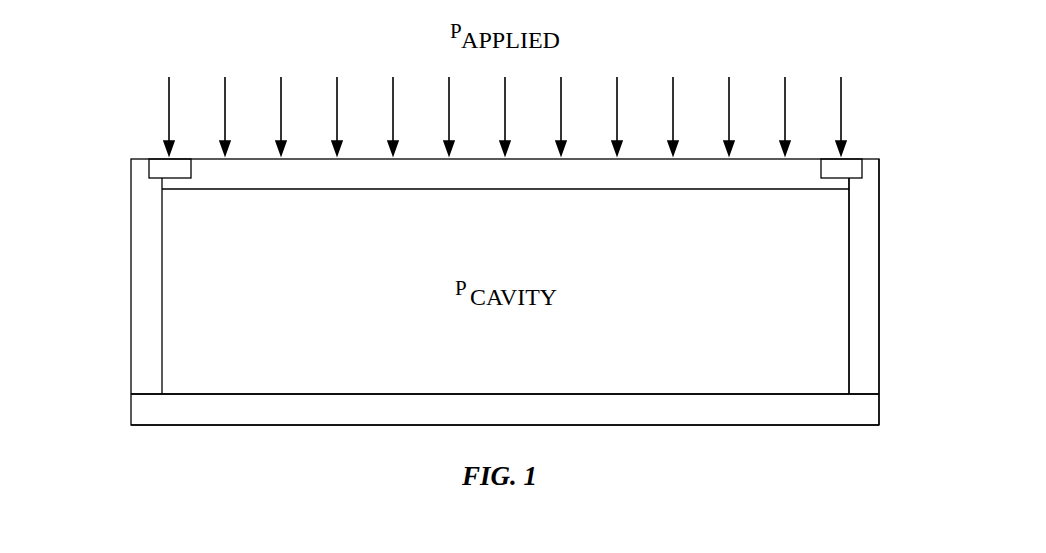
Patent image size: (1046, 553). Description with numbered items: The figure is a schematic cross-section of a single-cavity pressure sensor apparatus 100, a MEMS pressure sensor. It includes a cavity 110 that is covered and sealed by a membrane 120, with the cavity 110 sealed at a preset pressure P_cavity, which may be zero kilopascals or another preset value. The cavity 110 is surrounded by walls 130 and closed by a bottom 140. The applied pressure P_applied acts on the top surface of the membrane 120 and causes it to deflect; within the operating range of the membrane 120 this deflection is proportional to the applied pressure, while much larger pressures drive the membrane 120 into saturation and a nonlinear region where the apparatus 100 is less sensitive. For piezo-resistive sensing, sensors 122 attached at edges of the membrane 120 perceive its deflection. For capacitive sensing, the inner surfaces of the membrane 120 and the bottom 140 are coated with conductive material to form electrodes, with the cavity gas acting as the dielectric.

The single-cavity pressure sensor apparatus 100 is at (126, 97).
The cavity 110 is at (828, 339).
The membrane 120 is at (284, 198).
The sensors 122 is at (858, 168).
The walls 130 is at (873, 253).
The bottom 140 is at (141, 410).